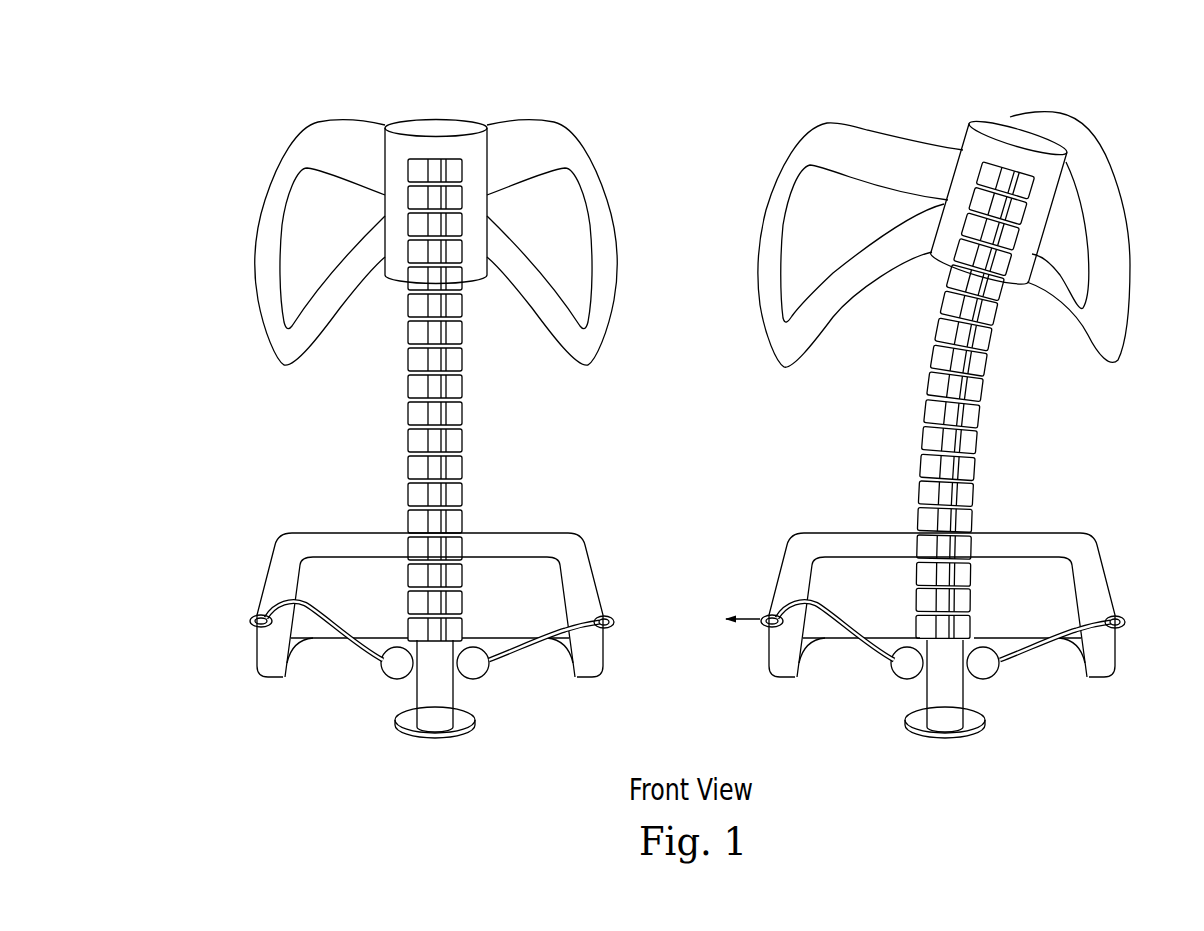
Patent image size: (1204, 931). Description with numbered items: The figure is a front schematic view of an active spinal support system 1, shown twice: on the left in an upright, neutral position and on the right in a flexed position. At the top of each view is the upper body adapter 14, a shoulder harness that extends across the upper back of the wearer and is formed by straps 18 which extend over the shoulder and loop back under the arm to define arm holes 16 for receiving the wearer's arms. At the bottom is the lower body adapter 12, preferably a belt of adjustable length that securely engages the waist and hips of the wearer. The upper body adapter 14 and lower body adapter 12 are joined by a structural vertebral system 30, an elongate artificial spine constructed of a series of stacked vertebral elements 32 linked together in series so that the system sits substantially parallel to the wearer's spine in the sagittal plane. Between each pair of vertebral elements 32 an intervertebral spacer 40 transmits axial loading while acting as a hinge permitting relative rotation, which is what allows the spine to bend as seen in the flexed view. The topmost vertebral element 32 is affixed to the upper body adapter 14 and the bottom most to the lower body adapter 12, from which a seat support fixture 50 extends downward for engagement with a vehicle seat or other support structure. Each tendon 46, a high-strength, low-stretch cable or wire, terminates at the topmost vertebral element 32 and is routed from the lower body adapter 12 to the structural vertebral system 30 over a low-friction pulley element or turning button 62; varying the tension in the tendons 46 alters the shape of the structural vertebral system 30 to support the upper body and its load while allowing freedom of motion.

The active spinal support system 1 is at (188, 74).
The lower body adapter 12 is at (275, 568).
The upper body adapter 14 is at (275, 207).
The arm holes 16 is at (300, 230).
The straps 18 is at (287, 158).
The structural vertebral system 30 is at (402, 181).
The vertebral elements 32 is at (410, 452).
The intervertebral spacer 40 is at (418, 360).
The tendon 46 is at (838, 638).
The seat support fixture 50 is at (425, 748).
The pulley element or turning button 62 is at (483, 676).